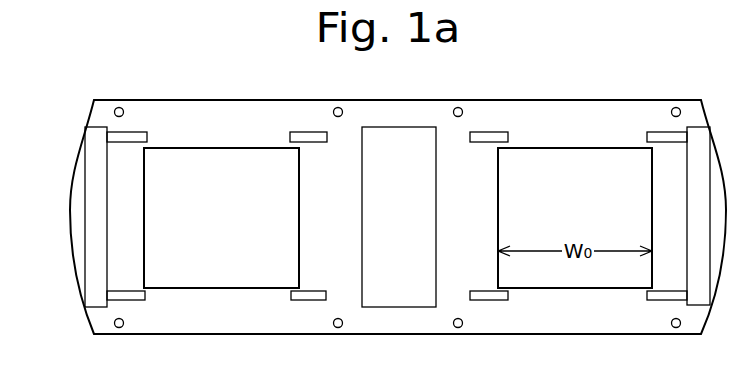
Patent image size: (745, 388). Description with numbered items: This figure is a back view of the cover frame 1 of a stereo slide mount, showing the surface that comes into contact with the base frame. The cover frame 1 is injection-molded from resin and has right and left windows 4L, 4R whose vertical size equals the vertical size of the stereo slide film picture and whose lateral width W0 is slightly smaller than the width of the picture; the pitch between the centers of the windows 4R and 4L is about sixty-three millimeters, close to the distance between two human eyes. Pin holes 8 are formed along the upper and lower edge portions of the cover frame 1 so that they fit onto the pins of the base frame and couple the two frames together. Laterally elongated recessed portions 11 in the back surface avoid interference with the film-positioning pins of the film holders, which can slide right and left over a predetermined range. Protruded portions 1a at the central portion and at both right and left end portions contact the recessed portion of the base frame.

The cover frame 1 is at (271, 77).
The protruded portions 1a is at (89, 172).
The left window 4L is at (242, 148).
The right window 4R is at (585, 148).
The pin holes 8 is at (119, 108).
The laterally elongated recessed portions 11 is at (132, 138).